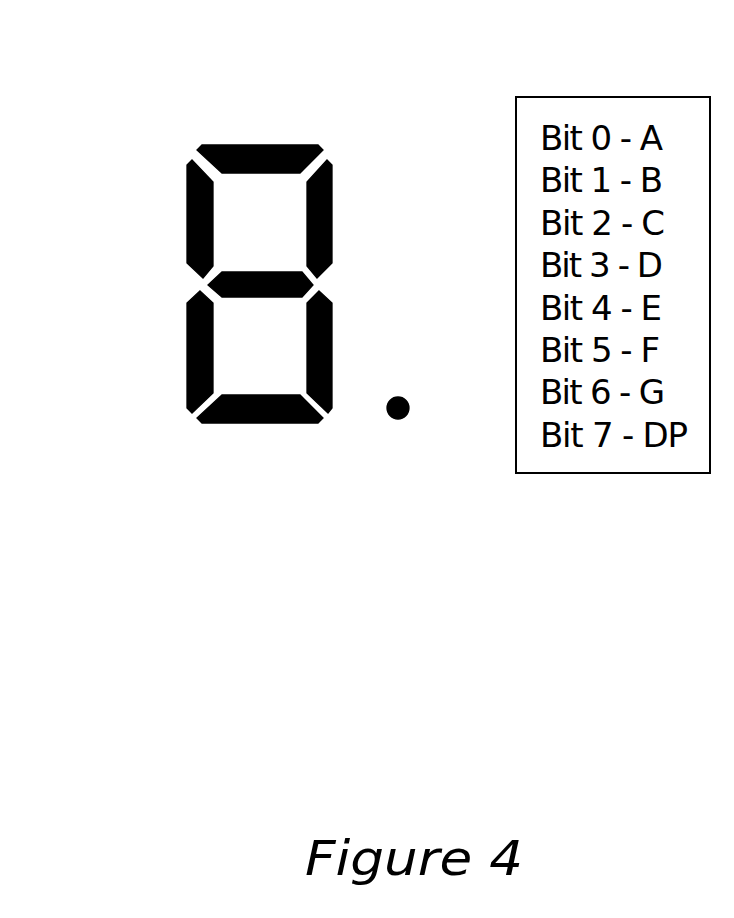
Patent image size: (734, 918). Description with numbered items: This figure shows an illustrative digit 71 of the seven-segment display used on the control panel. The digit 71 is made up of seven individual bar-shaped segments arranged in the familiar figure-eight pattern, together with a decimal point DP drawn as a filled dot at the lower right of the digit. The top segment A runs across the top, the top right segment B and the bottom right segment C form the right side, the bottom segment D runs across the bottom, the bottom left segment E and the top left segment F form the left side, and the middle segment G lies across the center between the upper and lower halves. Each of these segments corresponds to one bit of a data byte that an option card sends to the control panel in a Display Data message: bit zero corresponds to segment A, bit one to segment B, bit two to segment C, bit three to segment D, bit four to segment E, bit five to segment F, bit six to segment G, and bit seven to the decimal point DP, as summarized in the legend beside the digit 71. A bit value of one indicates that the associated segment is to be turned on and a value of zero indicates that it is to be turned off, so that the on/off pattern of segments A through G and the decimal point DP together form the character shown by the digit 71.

The digit 71 is at (132, 67).
The top segment A is at (260, 142).
The top right segment B is at (334, 219).
The bottom right segment C is at (334, 352).
The bottom segment D is at (260, 391).
The bottom left segment E is at (187, 352).
The top left segment F is at (187, 219).
The middle segment G is at (260, 265).
The decimal point DP is at (425, 410).